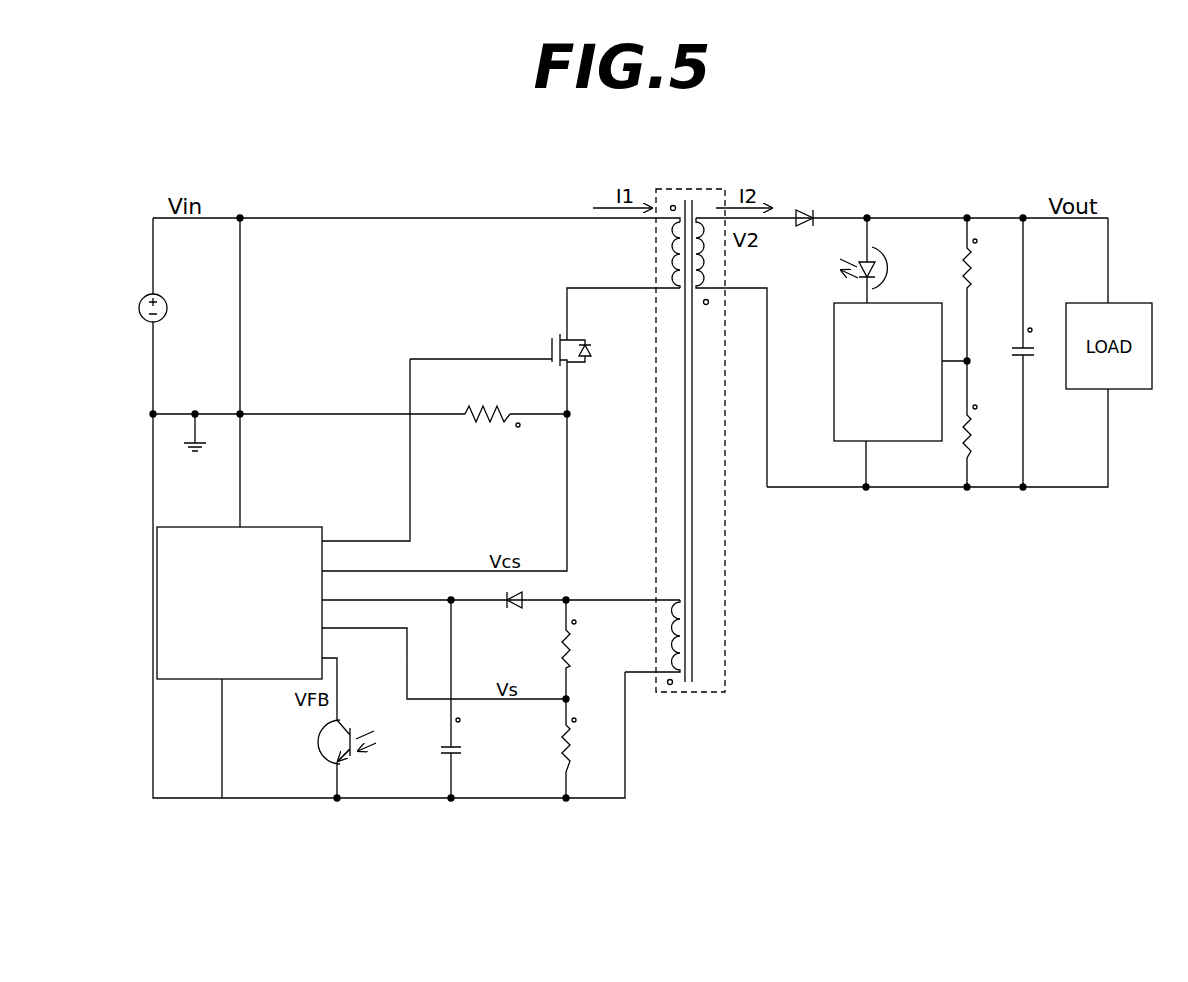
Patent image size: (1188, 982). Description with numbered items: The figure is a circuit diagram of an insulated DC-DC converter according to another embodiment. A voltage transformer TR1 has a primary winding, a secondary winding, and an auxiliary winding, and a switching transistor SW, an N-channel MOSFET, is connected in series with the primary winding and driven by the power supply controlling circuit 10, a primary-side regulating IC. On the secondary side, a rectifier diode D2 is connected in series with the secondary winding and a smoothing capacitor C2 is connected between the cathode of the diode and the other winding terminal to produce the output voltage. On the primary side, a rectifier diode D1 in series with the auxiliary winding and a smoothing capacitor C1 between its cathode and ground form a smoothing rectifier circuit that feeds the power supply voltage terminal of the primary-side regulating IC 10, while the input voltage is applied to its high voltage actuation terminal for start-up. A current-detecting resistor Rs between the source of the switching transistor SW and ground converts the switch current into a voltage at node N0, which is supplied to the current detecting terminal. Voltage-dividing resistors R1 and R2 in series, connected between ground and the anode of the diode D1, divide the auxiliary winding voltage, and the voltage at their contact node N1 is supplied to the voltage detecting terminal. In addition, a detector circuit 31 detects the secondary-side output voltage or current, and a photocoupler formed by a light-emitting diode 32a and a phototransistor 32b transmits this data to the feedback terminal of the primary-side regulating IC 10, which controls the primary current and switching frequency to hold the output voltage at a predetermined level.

The power supply controlling circuit 10 is at (288, 527).
The detector circuit 31 is at (834, 406).
The light-emitting diode 32a is at (889, 268).
The phototransistor 32b is at (317, 742).
The voltage transformer TR1 is at (690, 189).
The switching transistor SW is at (549, 333).
The current-detecting resistor Rs is at (487, 401).
The node N0 is at (569, 416).
The contact node N1 is at (568, 697).
The rectifier diode D1 is at (513, 617).
The rectifier diode D2 is at (812, 205).
The smoothing capacitor C1 is at (463, 699).
The smoothing capacitor C2 is at (1035, 352).
The voltage-dividing resistor R1 is at (584, 748).
The voltage-dividing resistor R2 is at (583, 649).